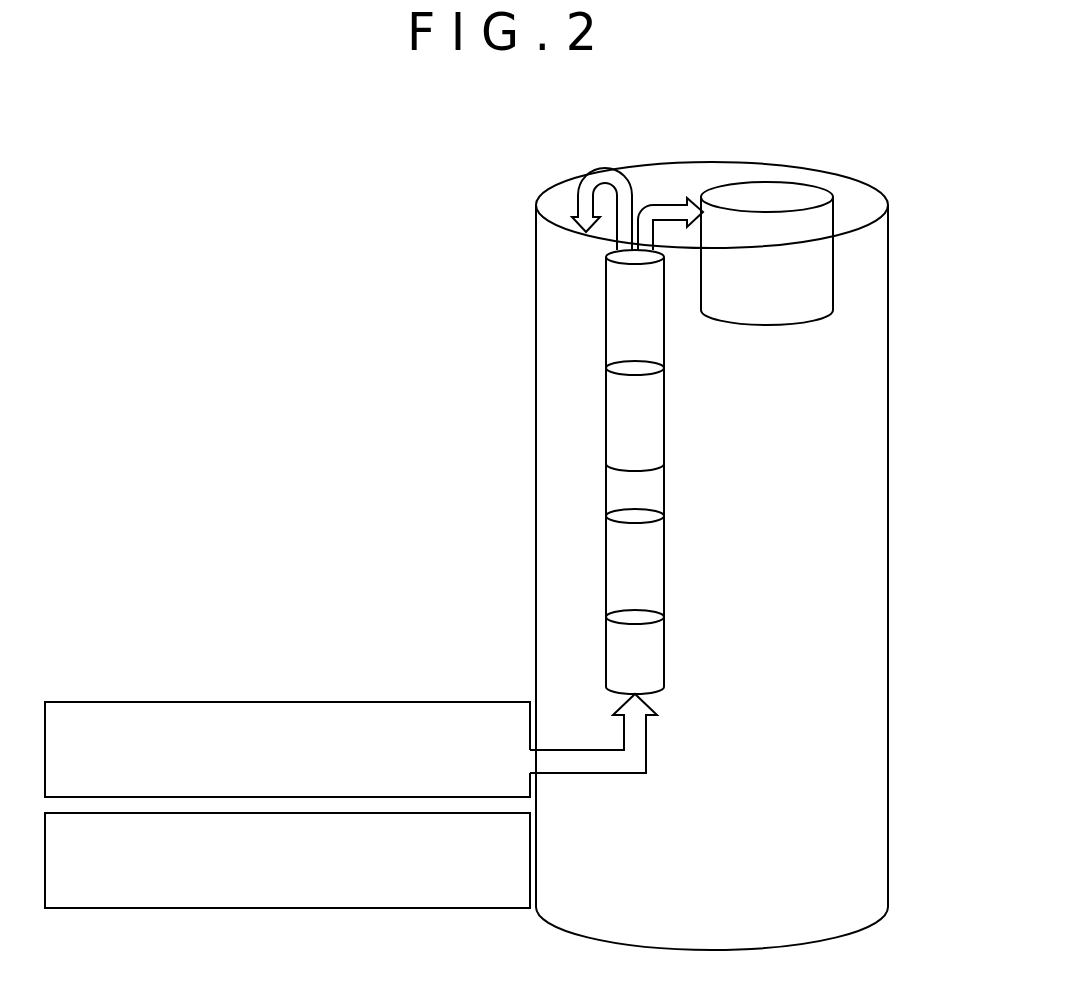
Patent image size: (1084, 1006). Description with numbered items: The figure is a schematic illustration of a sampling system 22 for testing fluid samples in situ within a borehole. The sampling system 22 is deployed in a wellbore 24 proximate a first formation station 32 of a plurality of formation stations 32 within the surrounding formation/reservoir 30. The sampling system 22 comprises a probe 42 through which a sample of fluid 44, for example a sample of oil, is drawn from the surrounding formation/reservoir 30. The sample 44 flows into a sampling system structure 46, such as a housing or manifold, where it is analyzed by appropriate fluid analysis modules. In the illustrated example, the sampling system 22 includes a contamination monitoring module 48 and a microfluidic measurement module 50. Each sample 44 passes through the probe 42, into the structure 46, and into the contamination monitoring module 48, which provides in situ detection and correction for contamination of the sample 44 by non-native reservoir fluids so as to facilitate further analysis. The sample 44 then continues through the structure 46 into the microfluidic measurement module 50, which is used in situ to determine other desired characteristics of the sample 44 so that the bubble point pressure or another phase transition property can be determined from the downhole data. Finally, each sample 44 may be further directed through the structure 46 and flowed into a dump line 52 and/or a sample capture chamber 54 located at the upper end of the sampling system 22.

The sampling system 22 is at (554, 445).
The wellbore 24 is at (865, 208).
The formation/reservoir 30 is at (372, 672).
The formation station 32 is at (212, 700).
The probe 42 is at (592, 775).
The sample of fluid 44 is at (648, 733).
The sampling system structure 46 is at (594, 643).
The contamination monitoring module 48 is at (648, 543).
The microfluidic measurement module 50 is at (648, 393).
The dump line 52 is at (582, 197).
The sample capture chamber 54 is at (835, 272).